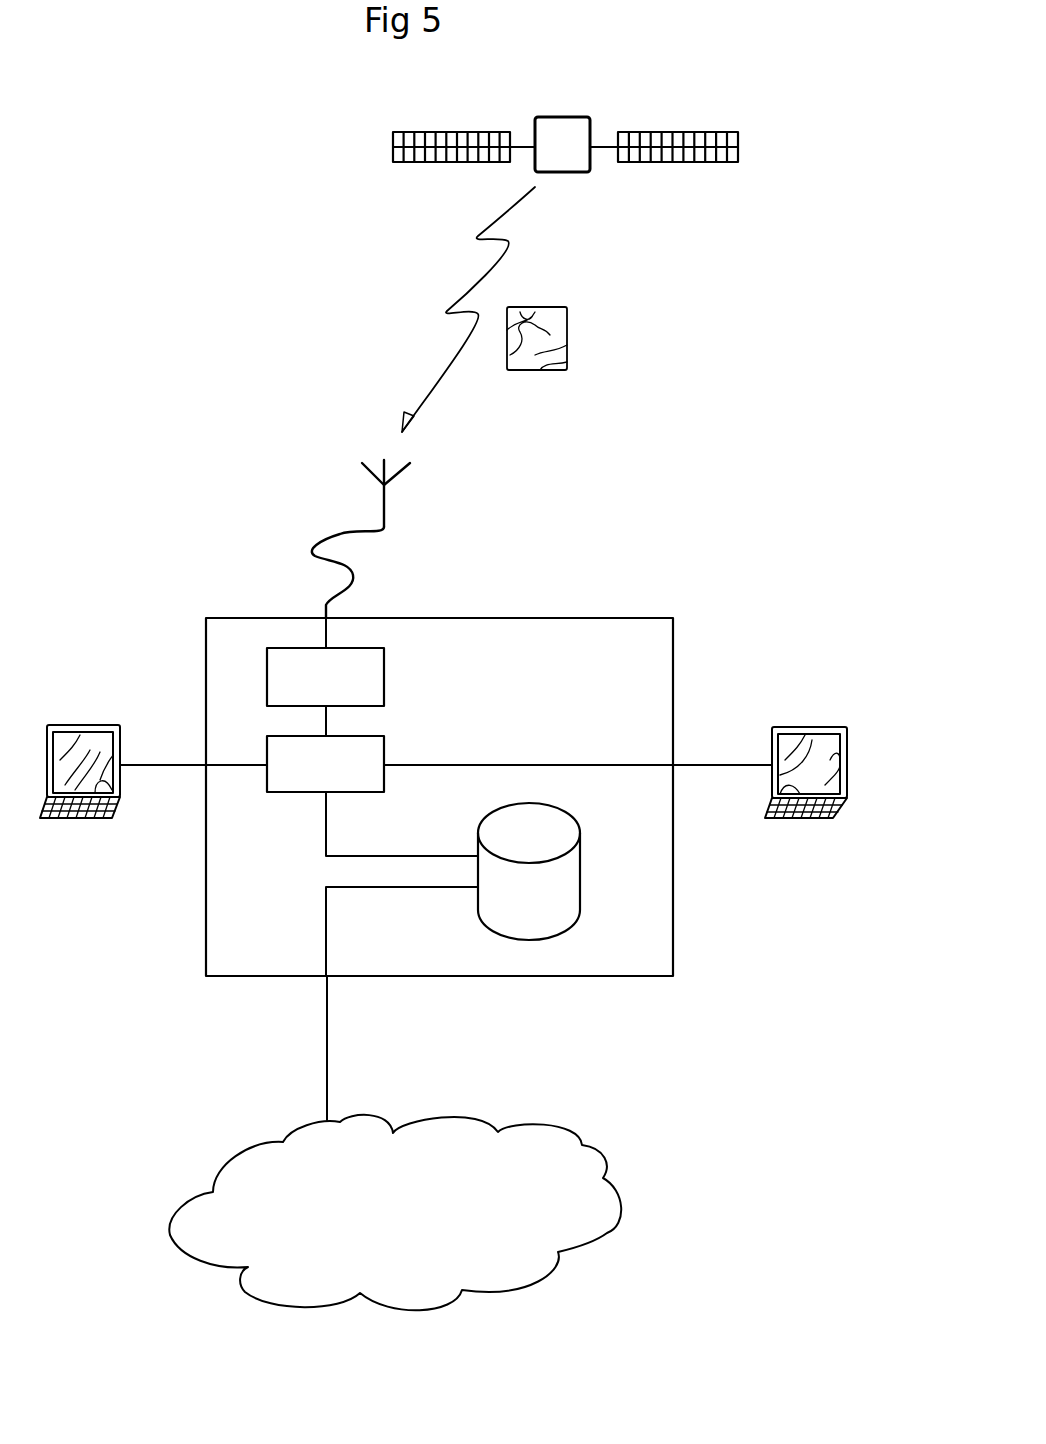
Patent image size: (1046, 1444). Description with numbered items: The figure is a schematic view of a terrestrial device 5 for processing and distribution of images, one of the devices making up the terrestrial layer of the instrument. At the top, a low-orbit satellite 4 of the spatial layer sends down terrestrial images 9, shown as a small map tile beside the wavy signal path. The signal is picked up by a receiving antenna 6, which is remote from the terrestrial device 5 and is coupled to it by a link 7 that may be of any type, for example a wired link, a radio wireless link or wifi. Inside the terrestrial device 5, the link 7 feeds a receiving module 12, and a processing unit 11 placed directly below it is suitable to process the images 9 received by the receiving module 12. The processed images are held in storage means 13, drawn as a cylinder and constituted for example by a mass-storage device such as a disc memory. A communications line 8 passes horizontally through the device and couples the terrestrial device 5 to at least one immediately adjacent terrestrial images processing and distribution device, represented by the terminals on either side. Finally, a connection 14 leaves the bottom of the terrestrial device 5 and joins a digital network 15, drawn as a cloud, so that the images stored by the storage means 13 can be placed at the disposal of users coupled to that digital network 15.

The satellite 4 is at (572, 125).
The images 9 is at (558, 343).
The receiving antenna 6 is at (387, 500).
The link 7 is at (325, 537).
The terrestrial device for processing and distribution of images 5 is at (205, 928).
The receiving module 12 is at (272, 648).
The processing unit 11 is at (372, 736).
The storage means 13 is at (580, 890).
The communications line 8 is at (165, 765).
The connection 14 is at (327, 977).
The digital network 15 is at (580, 1147).